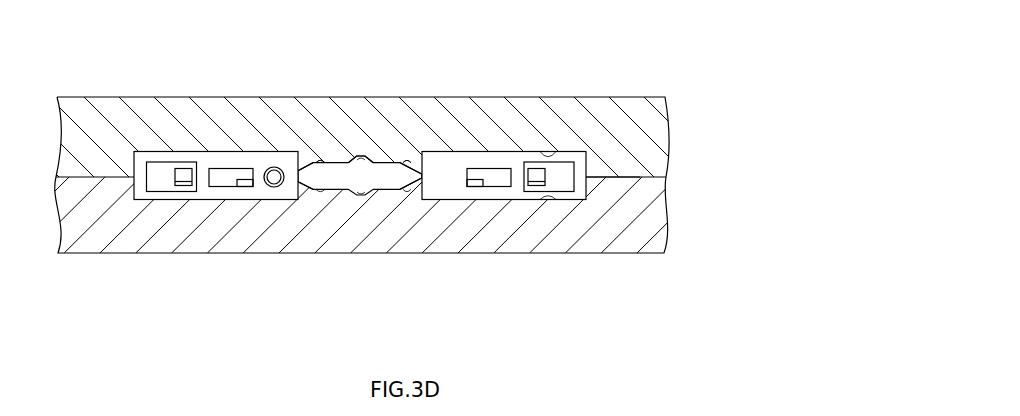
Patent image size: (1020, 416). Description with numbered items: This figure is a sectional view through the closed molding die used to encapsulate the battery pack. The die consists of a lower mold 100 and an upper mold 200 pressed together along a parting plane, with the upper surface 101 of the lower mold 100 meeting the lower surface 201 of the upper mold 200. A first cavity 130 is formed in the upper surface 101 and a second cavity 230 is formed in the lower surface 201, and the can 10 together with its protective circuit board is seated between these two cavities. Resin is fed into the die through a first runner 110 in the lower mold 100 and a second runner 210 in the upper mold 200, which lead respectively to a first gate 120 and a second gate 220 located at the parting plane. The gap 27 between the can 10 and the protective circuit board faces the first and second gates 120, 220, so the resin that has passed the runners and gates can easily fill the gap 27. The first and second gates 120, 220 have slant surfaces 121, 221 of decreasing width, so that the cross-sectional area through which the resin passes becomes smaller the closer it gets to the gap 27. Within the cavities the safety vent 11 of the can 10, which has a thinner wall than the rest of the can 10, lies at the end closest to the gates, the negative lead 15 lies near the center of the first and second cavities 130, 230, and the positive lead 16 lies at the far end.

The lower mold 100 is at (83, 242).
The upper mold 200 is at (100, 140).
The upper surface 101 is at (630, 176).
The lower surface 201 is at (648, 177).
The can 10 is at (150, 200).
The safety vent 11 is at (273, 157).
The negative lead 15 is at (247, 187).
The positive lead 16 is at (184, 192).
The gap 27 is at (205, 165).
The first runner 110 is at (361, 196).
The first gate 120 is at (315, 190).
The slant surface 121 is at (401, 190).
The second runner 210 is at (357, 156).
The second gate 220 is at (408, 162).
The slant surface 221 is at (326, 162).
The first cavity 130 is at (547, 200).
The second cavity 230 is at (538, 152).